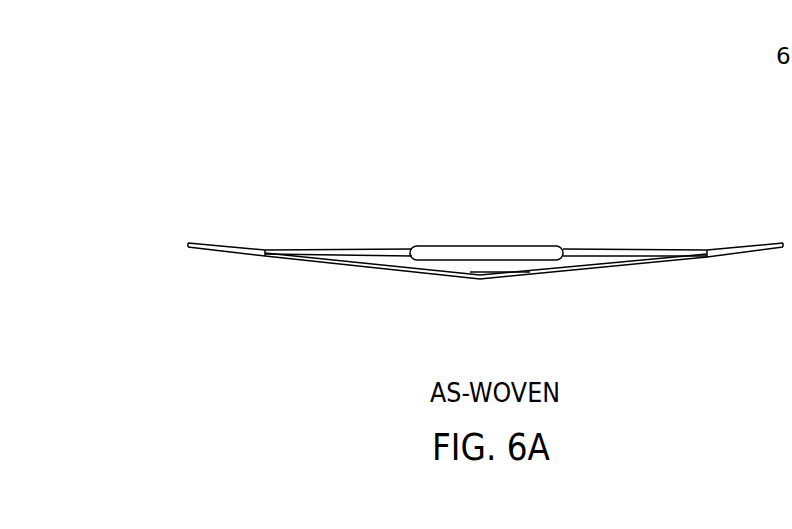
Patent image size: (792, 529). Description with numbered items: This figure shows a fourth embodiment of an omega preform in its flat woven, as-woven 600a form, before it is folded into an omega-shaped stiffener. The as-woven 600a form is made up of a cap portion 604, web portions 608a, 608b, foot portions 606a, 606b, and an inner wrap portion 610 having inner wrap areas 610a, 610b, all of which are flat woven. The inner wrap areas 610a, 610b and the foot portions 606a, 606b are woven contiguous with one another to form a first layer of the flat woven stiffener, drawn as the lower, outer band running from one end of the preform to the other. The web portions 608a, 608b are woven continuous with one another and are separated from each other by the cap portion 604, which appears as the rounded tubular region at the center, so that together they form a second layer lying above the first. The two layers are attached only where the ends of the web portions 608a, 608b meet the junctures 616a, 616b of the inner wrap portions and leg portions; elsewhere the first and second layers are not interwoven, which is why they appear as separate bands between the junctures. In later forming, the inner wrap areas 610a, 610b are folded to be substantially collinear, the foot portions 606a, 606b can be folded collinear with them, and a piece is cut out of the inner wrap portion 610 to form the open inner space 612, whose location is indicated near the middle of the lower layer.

The as-woven form 600a is at (230, 148).
The cap portion 604 is at (464, 246).
The foot portion 606a is at (197, 244).
The foot portion 606b is at (742, 247).
The web portion 608a is at (347, 249).
The web portion 608b is at (610, 249).
The inner wrap portion 610 is at (453, 295).
The inner wrap area 610a is at (398, 270).
The inner wrap area 610b is at (563, 275).
The open inner space 612 is at (518, 265).
The juncture 616a is at (266, 249).
The juncture 616b is at (705, 249).